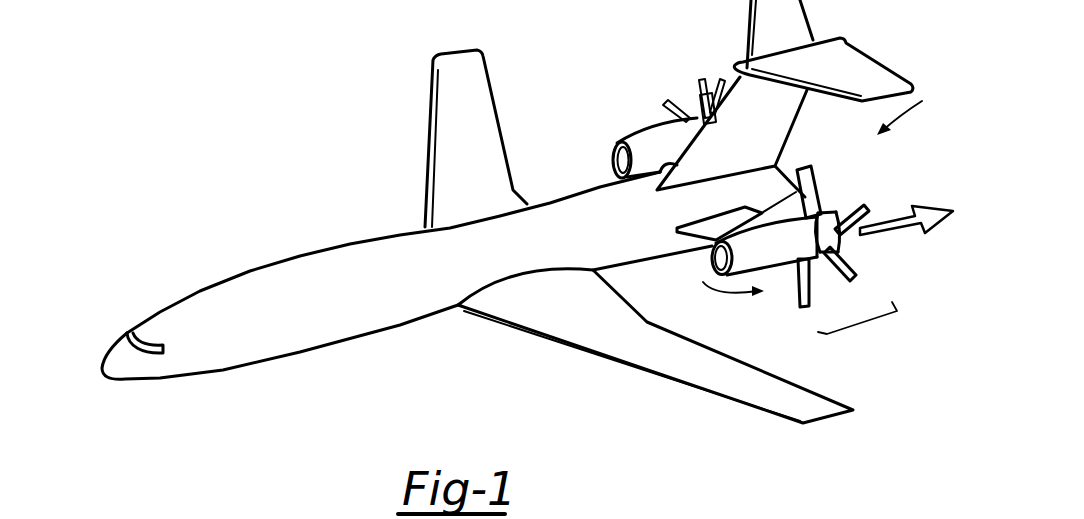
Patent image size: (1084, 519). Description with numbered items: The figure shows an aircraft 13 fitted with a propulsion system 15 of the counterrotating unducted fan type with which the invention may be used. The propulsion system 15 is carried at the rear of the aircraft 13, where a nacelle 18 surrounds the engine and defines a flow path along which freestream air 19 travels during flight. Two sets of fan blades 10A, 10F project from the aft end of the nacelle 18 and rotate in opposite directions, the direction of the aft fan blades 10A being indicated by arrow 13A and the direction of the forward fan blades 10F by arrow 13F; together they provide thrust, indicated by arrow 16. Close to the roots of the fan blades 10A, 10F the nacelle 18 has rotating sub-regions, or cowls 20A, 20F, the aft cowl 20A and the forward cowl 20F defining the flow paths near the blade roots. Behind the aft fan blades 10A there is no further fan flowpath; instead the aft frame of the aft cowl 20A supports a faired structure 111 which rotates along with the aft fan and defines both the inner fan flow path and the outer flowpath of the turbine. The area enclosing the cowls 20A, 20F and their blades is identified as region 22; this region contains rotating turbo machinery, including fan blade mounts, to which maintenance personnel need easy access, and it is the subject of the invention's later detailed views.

The aircraft 13 is at (478, 268).
The nacelle 18 is at (770, 269).
The faired structure 111 is at (848, 232).
The arrow 13A is at (829, 170).
The arrow 13F is at (848, 289).
The aft fan blades 10A is at (814, 172).
The forward fan blades 10F is at (798, 303).
The aft cowl 20A is at (840, 233).
The forward cowl 20F is at (840, 254).
The arrow 16 is at (928, 233).
The propulsion system 15 is at (914, 113).
The freestream air 19 is at (654, 293).
The region 22 is at (872, 327).